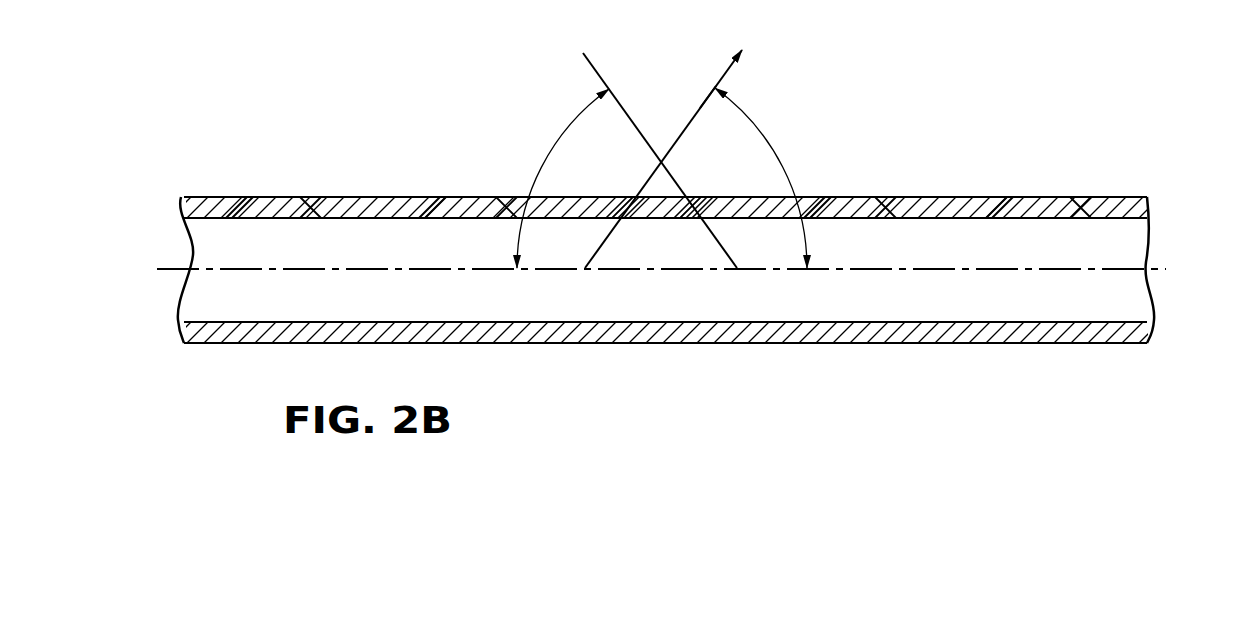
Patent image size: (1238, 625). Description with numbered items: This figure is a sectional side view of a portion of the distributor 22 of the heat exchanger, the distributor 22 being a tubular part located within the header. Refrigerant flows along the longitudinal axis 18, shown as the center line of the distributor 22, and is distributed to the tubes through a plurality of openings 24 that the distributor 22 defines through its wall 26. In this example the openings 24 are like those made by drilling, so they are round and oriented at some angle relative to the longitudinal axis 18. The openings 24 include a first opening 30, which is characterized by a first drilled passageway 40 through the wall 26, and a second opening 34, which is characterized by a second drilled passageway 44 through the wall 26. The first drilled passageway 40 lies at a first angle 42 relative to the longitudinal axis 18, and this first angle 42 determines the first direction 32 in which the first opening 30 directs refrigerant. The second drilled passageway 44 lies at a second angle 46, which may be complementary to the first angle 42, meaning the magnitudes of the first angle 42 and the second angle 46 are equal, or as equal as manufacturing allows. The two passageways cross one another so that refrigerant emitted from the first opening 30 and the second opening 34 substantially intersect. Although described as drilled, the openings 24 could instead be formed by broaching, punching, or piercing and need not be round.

The longitudinal axis 18 is at (1164, 272).
The distributor 22 is at (1066, 133).
The openings 24 is at (659, 240).
The wall 26 is at (1116, 201).
The first opening 30 is at (624, 188).
The first direction 32 is at (705, 101).
The second opening 34 is at (697, 188).
The first drilled passageway 40 is at (620, 219).
The first angle 42 is at (753, 123).
The second drilled passageway 44 is at (702, 219).
The second angle 46 is at (568, 127).